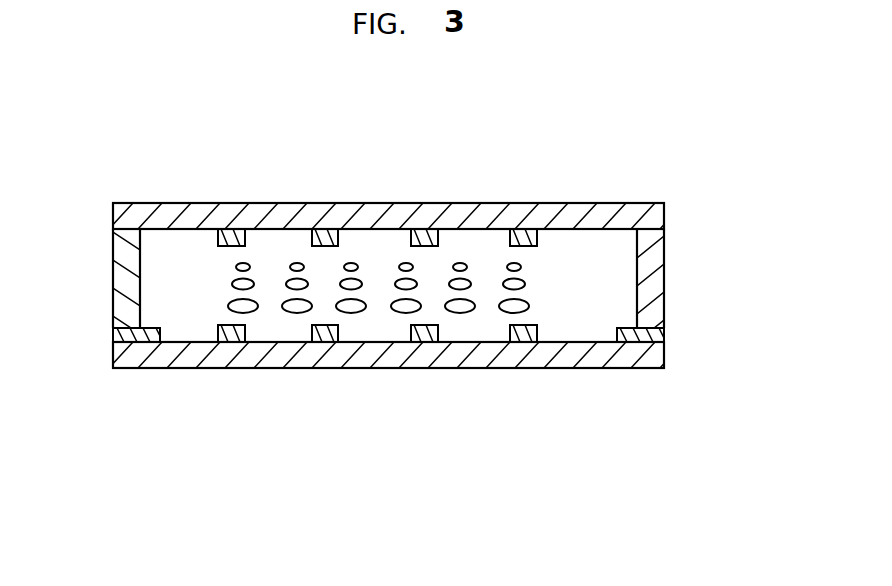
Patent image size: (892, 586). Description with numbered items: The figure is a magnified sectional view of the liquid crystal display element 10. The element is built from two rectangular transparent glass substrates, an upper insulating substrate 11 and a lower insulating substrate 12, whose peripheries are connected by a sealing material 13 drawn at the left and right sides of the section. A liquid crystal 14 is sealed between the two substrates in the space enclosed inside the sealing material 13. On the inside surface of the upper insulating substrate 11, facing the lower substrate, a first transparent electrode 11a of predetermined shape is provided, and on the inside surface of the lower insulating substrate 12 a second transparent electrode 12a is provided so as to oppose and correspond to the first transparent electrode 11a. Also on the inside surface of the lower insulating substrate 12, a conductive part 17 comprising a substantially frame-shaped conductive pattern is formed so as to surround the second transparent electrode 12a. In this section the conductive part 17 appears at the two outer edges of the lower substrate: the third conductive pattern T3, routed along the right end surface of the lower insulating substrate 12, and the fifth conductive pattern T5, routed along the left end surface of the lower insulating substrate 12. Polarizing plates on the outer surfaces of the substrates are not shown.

The liquid crystal display element 10 is at (388, 276).
The upper insulating substrate 11 is at (400, 215).
The first transparent electrode 11a is at (330, 238).
The lower insulating substrate 12 is at (280, 353).
The second transparent electrode 12a is at (525, 333).
The sealing material 13 is at (128, 283).
The liquid crystal 14 is at (230, 303).
The conductive part 17 is at (386, 386).
The fifth conductive pattern T5 is at (129, 333).
The third conductive pattern T3 is at (635, 335).